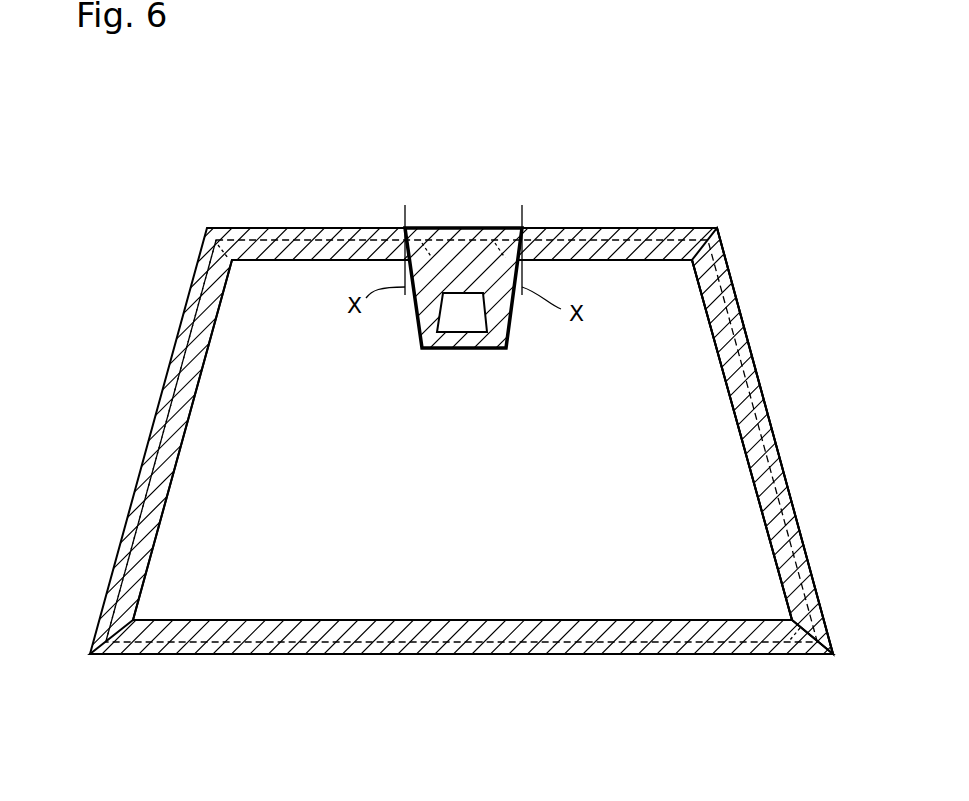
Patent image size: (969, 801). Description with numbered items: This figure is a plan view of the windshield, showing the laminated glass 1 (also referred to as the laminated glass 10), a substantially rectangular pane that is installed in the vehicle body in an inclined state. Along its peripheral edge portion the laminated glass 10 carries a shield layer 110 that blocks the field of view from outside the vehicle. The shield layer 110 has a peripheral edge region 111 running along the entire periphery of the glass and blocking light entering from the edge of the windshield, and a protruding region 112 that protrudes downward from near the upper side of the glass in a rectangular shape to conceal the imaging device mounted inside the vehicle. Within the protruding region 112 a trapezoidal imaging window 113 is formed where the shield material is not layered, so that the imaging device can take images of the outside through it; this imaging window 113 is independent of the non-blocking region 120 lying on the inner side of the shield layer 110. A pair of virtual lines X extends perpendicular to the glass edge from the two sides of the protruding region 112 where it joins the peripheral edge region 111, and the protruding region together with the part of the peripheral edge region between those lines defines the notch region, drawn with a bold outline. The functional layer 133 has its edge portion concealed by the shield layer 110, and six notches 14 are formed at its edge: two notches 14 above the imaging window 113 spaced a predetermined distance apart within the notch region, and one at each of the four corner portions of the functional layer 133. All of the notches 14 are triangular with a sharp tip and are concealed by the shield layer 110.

The laminated glass 1 is at (704, 196).
The laminated glass 10 is at (582, 660).
The notch 14 is at (230, 246).
The shield layer 110 is at (745, 309).
The peripheral edge region 111 is at (763, 410).
The protruding region 112 is at (420, 331).
The imaging window 113 is at (481, 313).
The non-blocking region 120 is at (708, 527).
The functional layer 133 is at (153, 432).